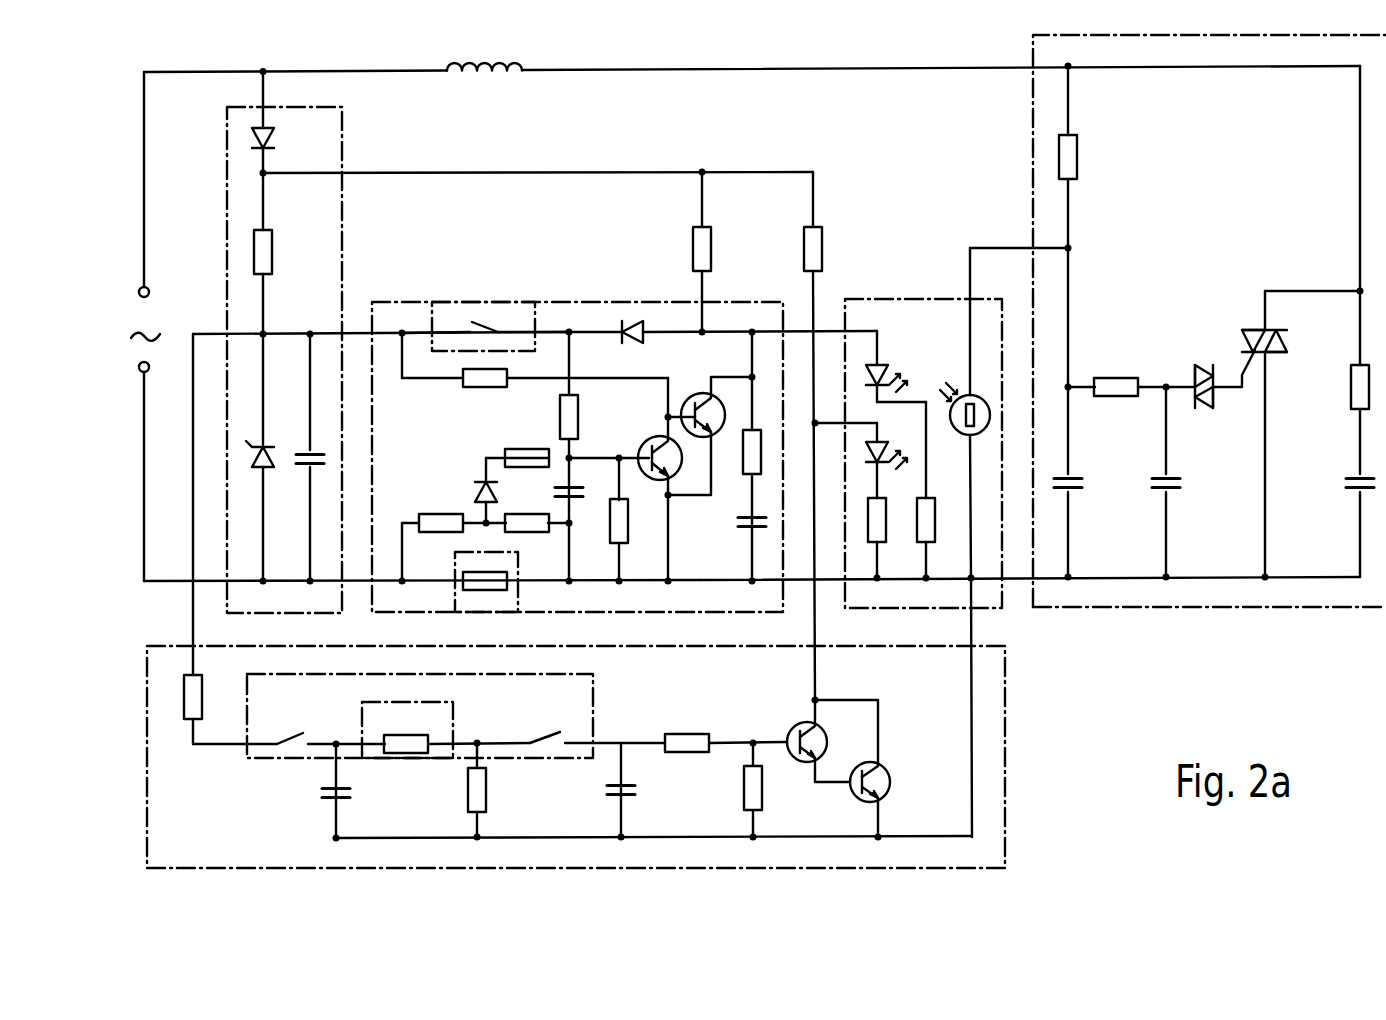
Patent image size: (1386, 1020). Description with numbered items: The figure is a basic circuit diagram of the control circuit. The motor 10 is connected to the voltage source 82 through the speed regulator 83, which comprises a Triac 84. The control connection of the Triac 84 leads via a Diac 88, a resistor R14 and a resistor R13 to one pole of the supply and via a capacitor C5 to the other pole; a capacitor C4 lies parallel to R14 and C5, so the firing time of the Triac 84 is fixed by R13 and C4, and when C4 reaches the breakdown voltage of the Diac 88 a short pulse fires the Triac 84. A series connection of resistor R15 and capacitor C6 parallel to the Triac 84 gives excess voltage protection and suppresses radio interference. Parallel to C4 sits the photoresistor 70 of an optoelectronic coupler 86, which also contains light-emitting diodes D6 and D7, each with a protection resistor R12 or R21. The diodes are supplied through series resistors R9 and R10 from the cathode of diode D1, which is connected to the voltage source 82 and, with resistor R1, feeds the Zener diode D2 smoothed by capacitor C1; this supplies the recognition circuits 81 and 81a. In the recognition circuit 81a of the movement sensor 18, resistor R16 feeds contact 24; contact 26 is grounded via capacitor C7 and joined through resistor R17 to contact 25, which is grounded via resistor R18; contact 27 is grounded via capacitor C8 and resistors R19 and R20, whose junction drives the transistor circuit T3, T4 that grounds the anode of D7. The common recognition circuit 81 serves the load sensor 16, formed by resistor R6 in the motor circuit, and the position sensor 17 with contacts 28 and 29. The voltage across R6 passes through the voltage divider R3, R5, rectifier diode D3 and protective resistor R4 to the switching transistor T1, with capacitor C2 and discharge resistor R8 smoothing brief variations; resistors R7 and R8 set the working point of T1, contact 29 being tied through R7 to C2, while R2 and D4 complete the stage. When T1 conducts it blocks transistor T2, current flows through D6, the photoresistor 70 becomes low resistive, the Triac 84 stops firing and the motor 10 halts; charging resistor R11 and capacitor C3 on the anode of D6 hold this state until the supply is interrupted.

The motor 10 is at (522, 66).
The load sensor 16 is at (513, 602).
The position sensor 17 is at (503, 302).
The movement sensor 18 is at (588, 686).
The contact 24 is at (278, 731).
The contact 25 is at (468, 727).
The contact 26 is at (344, 727).
The contact 27 is at (559, 725).
The contact 28 is at (436, 316).
The contact 29 is at (520, 316).
The photoresistor 70 is at (983, 402).
The recognition circuit 81 is at (596, 302).
The recognition circuit 81a is at (997, 692).
The voltage source 82 is at (150, 316).
The speed regulator 83 is at (1040, 108).
The Triac 84 is at (1250, 326).
The optoelectronic coupler 86 is at (923, 300).
The Diac 88 is at (1200, 368).
The resistor R1 is at (276, 252).
The resistor R2 is at (485, 391).
The resistor R3 is at (441, 537).
The protective resistor R4 is at (527, 444).
The resistor R5 is at (529, 537).
The resistor R6 is at (485, 566).
The resistor R7 is at (582, 417).
The discharge resistor R8 is at (632, 521).
The series resistor R9 is at (716, 249).
The series resistor R10 is at (832, 249).
The charging resistor R11 is at (762, 465).
The protection resistor R12 is at (937, 534).
The resistor R13 is at (1085, 157).
The resistor R14 is at (1116, 374).
The resistor R15 is at (1343, 387).
The resistor R16 is at (177, 697).
The resistor R17 is at (406, 729).
The resistor R18 is at (494, 790).
The resistor R19 is at (687, 729).
The resistor R20 is at (736, 788).
The protection resistor R21 is at (890, 534).
The smoothing capacitor C1 is at (316, 475).
The capacitor C2 is at (559, 490).
The capacitor C3 is at (739, 518).
The capacitor C4 is at (1083, 482).
The capacitor C5 is at (1181, 482).
The capacitor C6 is at (1346, 482).
The charging capacitor C7 is at (350, 792).
The capacitor C8 is at (634, 790).
The diode D1 is at (278, 137).
The Zener diode D2 is at (254, 468).
The rectifier diode D3 is at (475, 490).
The diode D4 is at (638, 353).
The light-emitting diode D6 is at (899, 350).
The light-emitting diode D7 is at (899, 427).
The switching transistor T1 is at (638, 423).
The transistor T2 is at (695, 378).
The transistor T3 is at (783, 712).
The transistor T4 is at (847, 806).